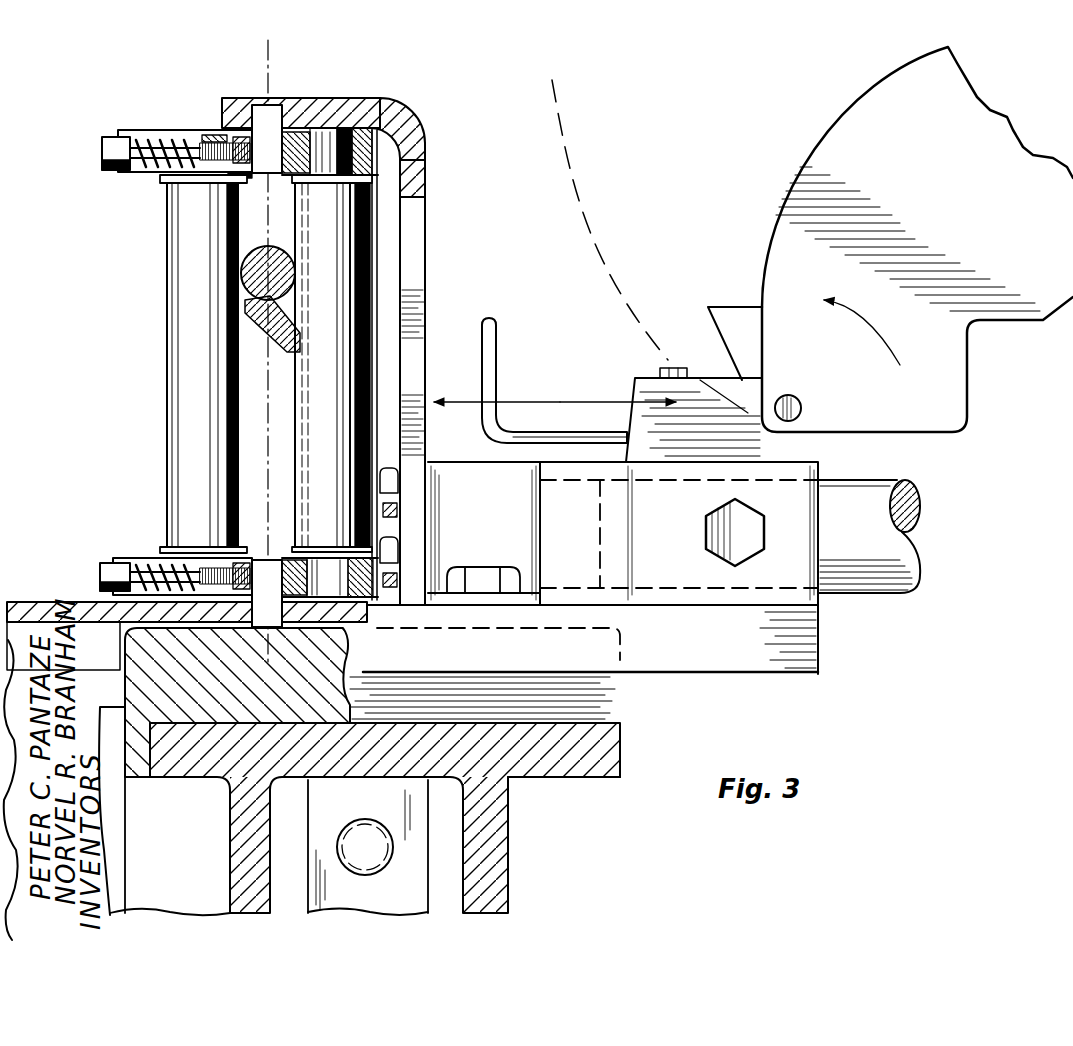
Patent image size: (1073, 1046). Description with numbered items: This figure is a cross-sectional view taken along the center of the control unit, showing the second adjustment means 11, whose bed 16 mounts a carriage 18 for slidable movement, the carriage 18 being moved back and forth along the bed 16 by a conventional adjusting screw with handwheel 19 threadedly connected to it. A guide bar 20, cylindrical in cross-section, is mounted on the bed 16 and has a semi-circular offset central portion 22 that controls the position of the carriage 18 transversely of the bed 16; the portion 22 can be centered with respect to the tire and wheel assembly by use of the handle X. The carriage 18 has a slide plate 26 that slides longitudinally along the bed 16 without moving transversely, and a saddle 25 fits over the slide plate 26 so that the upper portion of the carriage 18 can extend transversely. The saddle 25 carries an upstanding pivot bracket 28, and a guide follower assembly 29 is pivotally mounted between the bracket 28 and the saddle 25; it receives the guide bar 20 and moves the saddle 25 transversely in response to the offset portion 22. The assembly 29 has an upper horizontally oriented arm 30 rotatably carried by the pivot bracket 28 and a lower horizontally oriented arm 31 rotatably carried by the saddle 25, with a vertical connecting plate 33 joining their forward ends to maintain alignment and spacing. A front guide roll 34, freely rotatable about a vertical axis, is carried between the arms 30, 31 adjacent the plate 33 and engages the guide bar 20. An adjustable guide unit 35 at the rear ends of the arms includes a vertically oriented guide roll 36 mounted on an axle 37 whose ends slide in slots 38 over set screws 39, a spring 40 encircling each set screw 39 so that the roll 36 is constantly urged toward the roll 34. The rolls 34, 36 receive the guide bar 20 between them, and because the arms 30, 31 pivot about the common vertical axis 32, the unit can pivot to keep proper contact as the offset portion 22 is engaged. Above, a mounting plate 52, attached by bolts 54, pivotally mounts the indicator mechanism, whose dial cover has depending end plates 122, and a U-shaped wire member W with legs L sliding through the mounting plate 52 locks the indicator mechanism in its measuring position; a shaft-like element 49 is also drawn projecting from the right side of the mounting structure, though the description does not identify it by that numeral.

The second adjustment means 11 is at (510, 841).
The bed 16 is at (525, 778).
The carriage 18 is at (623, 736).
The adjusting screw with handwheel 19 is at (357, 868).
The guide bar 20 is at (284, 339).
The semi-circular offset central portion 22 is at (285, 263).
The saddle 25 is at (2, 602).
The slide plate 26 is at (622, 674).
The pivot bracket 28 is at (421, 196).
The guide follower assembly 29 is at (388, 146).
The upper horizontally oriented arm 30 is at (296, 136).
The lower horizontally oriented arm 31 is at (300, 628).
The common vertical axis 32 is at (290, 467).
The vertical connecting plate 33 is at (379, 273).
The front guide roll 34 is at (300, 513).
The adjustable guide unit 35 is at (166, 198).
The guide roll 36 is at (174, 357).
The axle 37 is at (211, 129).
The slots 38 is at (143, 131).
The set screws 39 is at (110, 161).
The spring 40 is at (170, 133).
The shaft 49 is at (915, 521).
The mounting plate 52 is at (641, 389).
The bolts 54 is at (690, 356).
The depending end plates 122 is at (733, 242).
The U-shaped wire member W is at (497, 378).
The handle X is at (564, 398).
The legs L is at (558, 433).